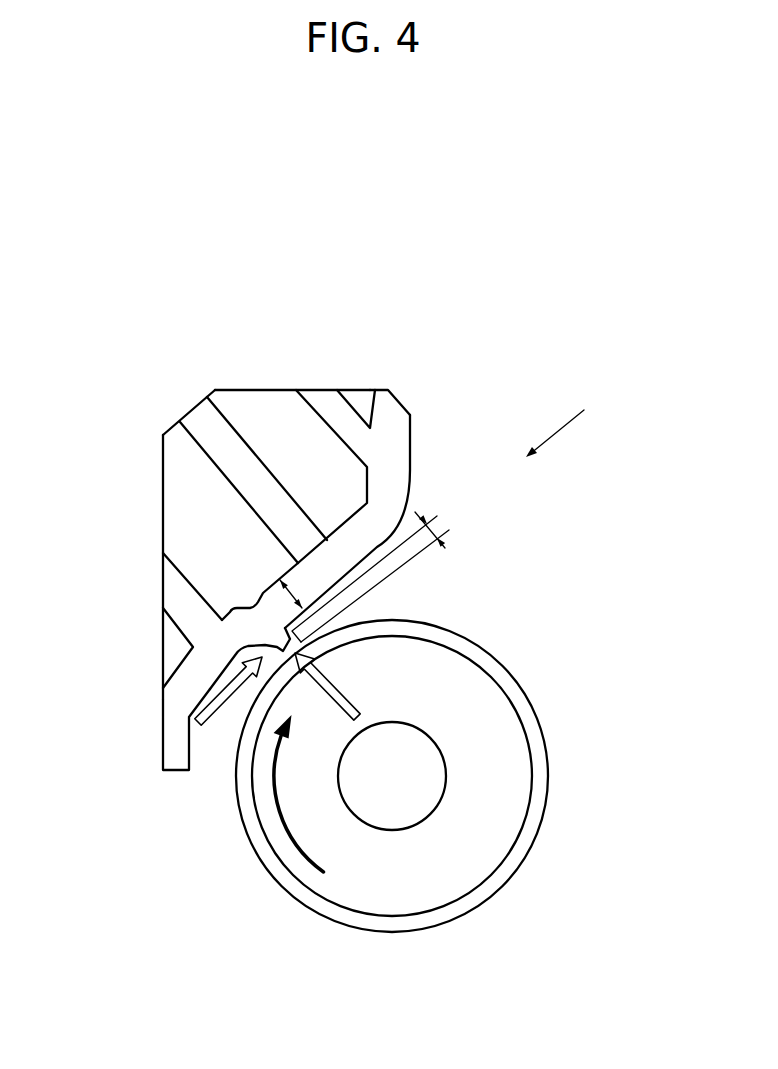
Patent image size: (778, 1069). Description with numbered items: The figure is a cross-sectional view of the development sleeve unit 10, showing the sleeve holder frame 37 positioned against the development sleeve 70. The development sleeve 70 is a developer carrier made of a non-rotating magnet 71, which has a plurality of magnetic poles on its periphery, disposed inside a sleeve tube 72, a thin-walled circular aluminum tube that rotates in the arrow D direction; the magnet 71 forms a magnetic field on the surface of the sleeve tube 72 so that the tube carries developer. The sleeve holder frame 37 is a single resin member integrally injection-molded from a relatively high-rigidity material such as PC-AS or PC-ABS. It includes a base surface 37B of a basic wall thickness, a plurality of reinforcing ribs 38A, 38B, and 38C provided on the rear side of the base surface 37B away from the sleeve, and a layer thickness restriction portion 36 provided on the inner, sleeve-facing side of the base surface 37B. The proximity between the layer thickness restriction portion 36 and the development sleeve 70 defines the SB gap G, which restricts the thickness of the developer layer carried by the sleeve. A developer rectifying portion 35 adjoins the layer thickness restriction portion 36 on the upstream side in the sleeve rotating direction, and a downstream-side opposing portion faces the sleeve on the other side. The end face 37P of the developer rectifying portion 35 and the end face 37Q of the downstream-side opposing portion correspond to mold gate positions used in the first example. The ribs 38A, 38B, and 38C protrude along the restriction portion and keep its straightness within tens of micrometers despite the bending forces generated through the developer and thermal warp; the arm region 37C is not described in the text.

The development sleeve unit 10 is at (326, 228).
The sleeve holder frame 37 is at (303, 375).
The base surface 37B is at (397, 465).
The holder arm (thin plate portion) 37C is at (360, 590).
The end face of the developer rectifying portion 37P is at (167, 776).
The end face of the downstream-side opposing portion 37Q is at (388, 390).
The reinforcing rib 38A is at (203, 418).
The reinforcing rib 38B is at (353, 406).
The reinforcing rib 38C is at (180, 628).
The developer rectifying portion 35 is at (263, 650).
The layer thickness restriction portion 36 is at (322, 630).
The development sleeve 70 is at (621, 747).
The magnet 71 is at (520, 762).
The sleeve tube 72 is at (522, 847).